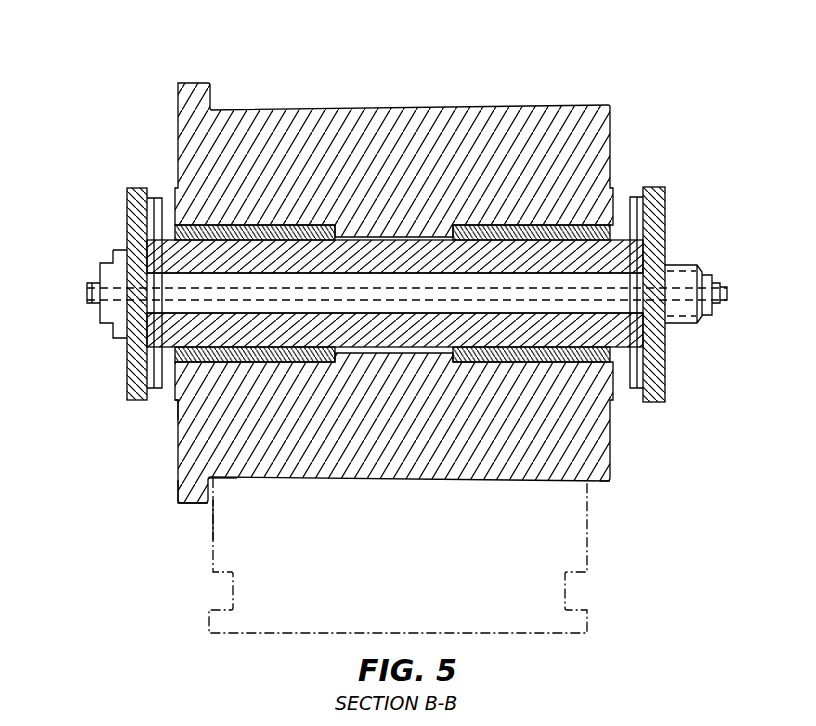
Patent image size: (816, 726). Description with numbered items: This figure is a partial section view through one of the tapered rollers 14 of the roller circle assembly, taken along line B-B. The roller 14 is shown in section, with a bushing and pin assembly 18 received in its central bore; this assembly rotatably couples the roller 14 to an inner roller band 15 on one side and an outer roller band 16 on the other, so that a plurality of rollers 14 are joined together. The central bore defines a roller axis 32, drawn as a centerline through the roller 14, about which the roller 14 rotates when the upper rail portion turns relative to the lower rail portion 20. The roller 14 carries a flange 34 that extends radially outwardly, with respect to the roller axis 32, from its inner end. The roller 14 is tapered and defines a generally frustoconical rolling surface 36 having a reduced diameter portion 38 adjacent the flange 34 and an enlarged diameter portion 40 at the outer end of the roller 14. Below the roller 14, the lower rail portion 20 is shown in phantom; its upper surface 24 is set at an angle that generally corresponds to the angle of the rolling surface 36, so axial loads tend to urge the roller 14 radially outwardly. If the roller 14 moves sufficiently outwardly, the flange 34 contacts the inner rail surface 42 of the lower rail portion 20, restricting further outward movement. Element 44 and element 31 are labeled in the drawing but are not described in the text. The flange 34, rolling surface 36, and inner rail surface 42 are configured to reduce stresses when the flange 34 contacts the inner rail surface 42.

The tapered roller 14 is at (293, 130).
The inner roller band 15 is at (126, 208).
The outer roller band 16 is at (655, 352).
The bushing and pin assembly 18 is at (684, 265).
The lower rail portion 20 is at (545, 628).
The upper surface 24 is at (386, 466).
The bolt head 31 is at (107, 294).
The roller axis 32 is at (127, 344).
The flange 34 is at (191, 490).
The frustoconical rolling surface 36 is at (316, 482).
The reduced diameter portion 38 is at (237, 479).
The enlarged diameter portion 40 is at (608, 482).
The inner rail surface 42 is at (205, 522).
The shoulder 44 is at (168, 409).